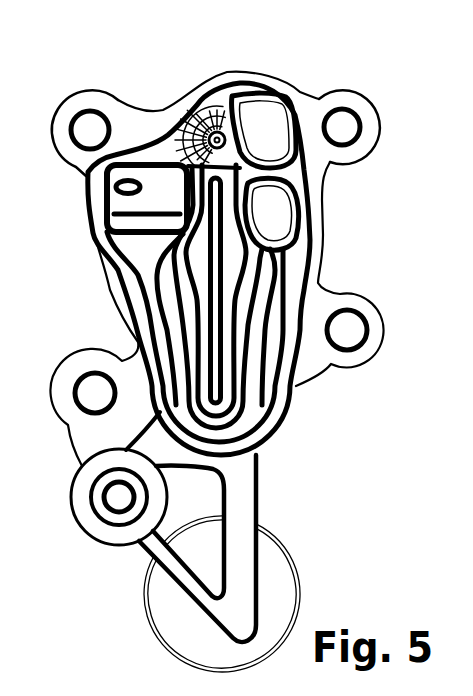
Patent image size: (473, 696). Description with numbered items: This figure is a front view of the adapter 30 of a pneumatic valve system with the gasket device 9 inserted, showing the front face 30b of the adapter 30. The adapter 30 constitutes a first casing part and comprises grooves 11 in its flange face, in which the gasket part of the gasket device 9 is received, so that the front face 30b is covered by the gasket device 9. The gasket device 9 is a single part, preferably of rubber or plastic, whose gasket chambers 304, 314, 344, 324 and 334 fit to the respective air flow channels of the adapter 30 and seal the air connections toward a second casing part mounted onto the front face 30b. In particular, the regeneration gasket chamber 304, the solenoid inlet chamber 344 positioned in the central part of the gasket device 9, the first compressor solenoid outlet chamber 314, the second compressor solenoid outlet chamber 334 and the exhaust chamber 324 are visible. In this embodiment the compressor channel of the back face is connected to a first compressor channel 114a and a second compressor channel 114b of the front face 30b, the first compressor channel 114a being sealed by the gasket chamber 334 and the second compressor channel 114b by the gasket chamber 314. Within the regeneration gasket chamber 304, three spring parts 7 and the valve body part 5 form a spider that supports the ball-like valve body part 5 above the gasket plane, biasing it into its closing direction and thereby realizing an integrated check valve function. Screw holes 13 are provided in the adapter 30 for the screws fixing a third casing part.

The valve body part 5 is at (255, 100).
The spring parts 7 is at (207, 117).
The gasket device 9 is at (97, 200).
The grooves 11 is at (283, 83).
The screw holes 13 is at (84, 390).
The adapter 30 is at (333, 373).
The front face 30b is at (331, 82).
The first compressor channel 114a is at (167, 378).
The second compressor channel 114b is at (253, 393).
The regeneration gasket chamber 304 is at (268, 134).
The first compressor solenoid outlet chamber 314 is at (300, 206).
The exhaust chamber 324 is at (95, 525).
The second compressor solenoid outlet chamber 334 is at (110, 243).
The solenoid inlet chamber 344 is at (223, 270).